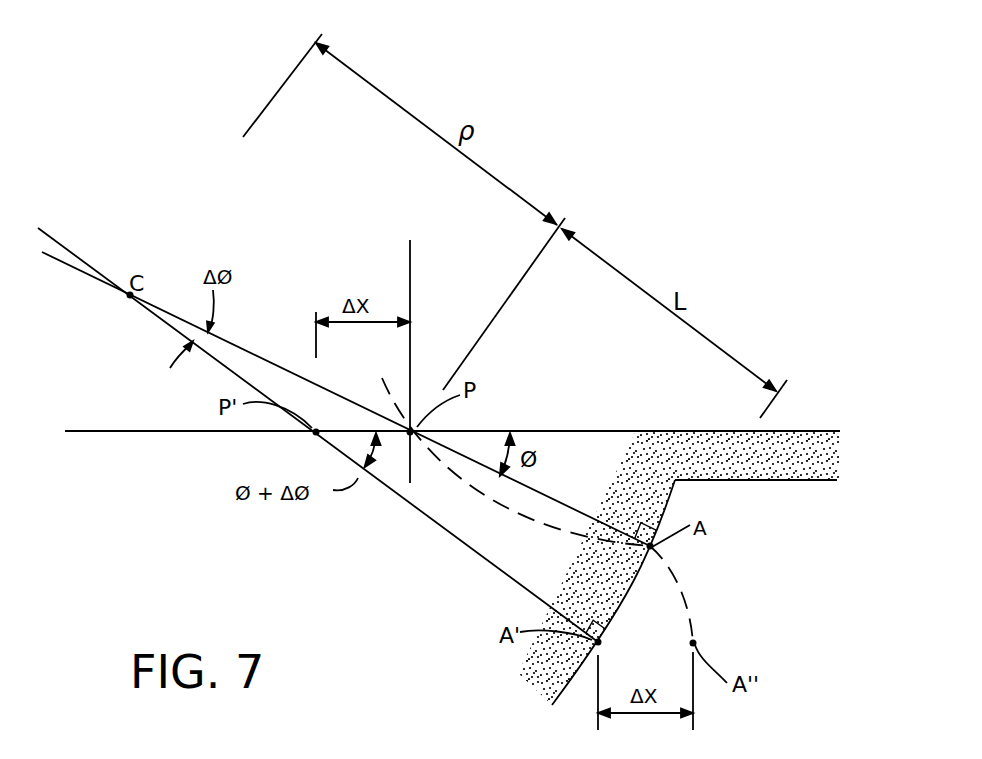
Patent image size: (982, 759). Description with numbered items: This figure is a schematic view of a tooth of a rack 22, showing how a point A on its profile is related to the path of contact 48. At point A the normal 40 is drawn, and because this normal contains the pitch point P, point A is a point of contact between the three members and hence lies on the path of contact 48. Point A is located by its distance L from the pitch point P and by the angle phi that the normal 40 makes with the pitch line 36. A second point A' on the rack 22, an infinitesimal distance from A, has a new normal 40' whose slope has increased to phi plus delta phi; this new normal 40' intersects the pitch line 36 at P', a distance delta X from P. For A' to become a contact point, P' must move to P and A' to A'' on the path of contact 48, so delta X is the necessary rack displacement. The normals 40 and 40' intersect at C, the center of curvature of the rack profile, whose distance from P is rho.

The rack 22 is at (758, 480).
The pitch line 36 is at (648, 430).
The normal 40 is at (346, 399).
The new normal 40' is at (318, 435).
The path of contact 48 is at (660, 553).